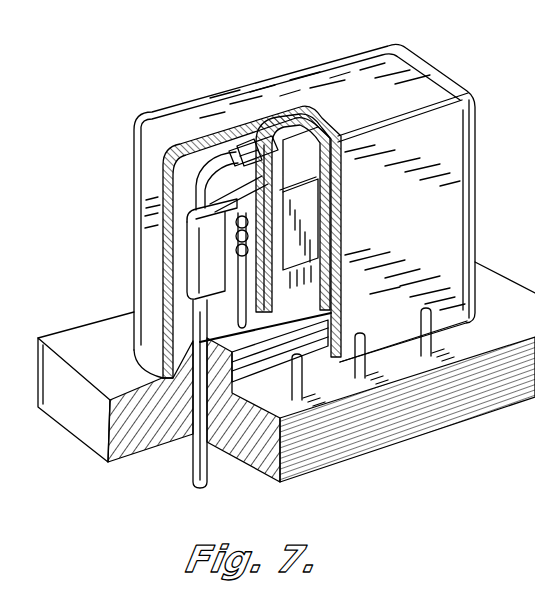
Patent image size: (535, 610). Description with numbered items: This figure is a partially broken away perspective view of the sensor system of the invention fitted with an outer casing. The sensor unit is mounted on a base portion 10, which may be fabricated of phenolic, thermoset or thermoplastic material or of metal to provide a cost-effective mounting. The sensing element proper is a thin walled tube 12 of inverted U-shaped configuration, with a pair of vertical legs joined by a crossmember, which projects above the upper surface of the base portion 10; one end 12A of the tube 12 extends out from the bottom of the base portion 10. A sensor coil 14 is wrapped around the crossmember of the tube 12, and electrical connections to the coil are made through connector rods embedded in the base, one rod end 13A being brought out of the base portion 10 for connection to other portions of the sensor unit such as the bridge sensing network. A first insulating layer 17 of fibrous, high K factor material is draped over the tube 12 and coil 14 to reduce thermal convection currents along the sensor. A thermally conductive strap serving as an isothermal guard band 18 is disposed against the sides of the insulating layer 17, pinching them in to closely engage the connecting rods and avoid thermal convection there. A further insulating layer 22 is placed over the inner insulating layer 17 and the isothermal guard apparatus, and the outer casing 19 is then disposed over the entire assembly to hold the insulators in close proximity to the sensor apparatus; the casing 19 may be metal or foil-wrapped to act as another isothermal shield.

The base portion 10 is at (63, 331).
The thin walled tube 12 is at (188, 180).
The end of tube 12A is at (190, 460).
The end of connector rod 13A is at (363, 363).
The sensor coil 14 is at (232, 150).
The insulating layer 17 is at (262, 133).
The isothermal band 18 is at (190, 242).
The outer casing 19 is at (170, 107).
The further insulating layer 22 is at (302, 105).